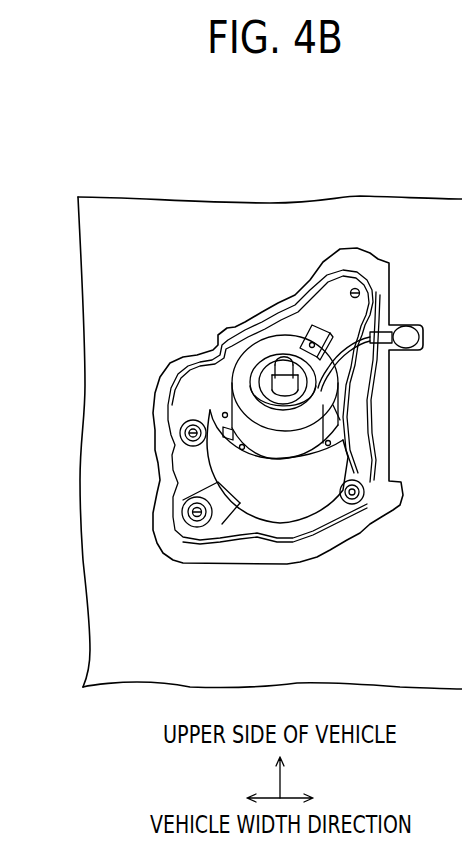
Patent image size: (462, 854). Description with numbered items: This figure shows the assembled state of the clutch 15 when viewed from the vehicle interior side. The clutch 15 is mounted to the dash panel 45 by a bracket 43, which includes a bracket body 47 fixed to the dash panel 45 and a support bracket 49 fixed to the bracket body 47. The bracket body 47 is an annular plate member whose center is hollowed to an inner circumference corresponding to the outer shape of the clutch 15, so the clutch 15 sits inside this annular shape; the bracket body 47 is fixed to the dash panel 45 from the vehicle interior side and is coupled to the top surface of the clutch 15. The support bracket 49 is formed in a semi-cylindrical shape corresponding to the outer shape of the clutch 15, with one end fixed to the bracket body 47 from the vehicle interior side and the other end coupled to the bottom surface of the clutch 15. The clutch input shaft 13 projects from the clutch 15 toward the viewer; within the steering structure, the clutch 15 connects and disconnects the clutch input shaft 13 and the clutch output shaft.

The clutch input shaft 13 is at (283, 362).
The clutch 15 is at (232, 394).
The bracket 43 is at (318, 634).
The dash panel 45 is at (317, 206).
The bracket body 47 is at (293, 548).
The support bracket 49 is at (260, 500).